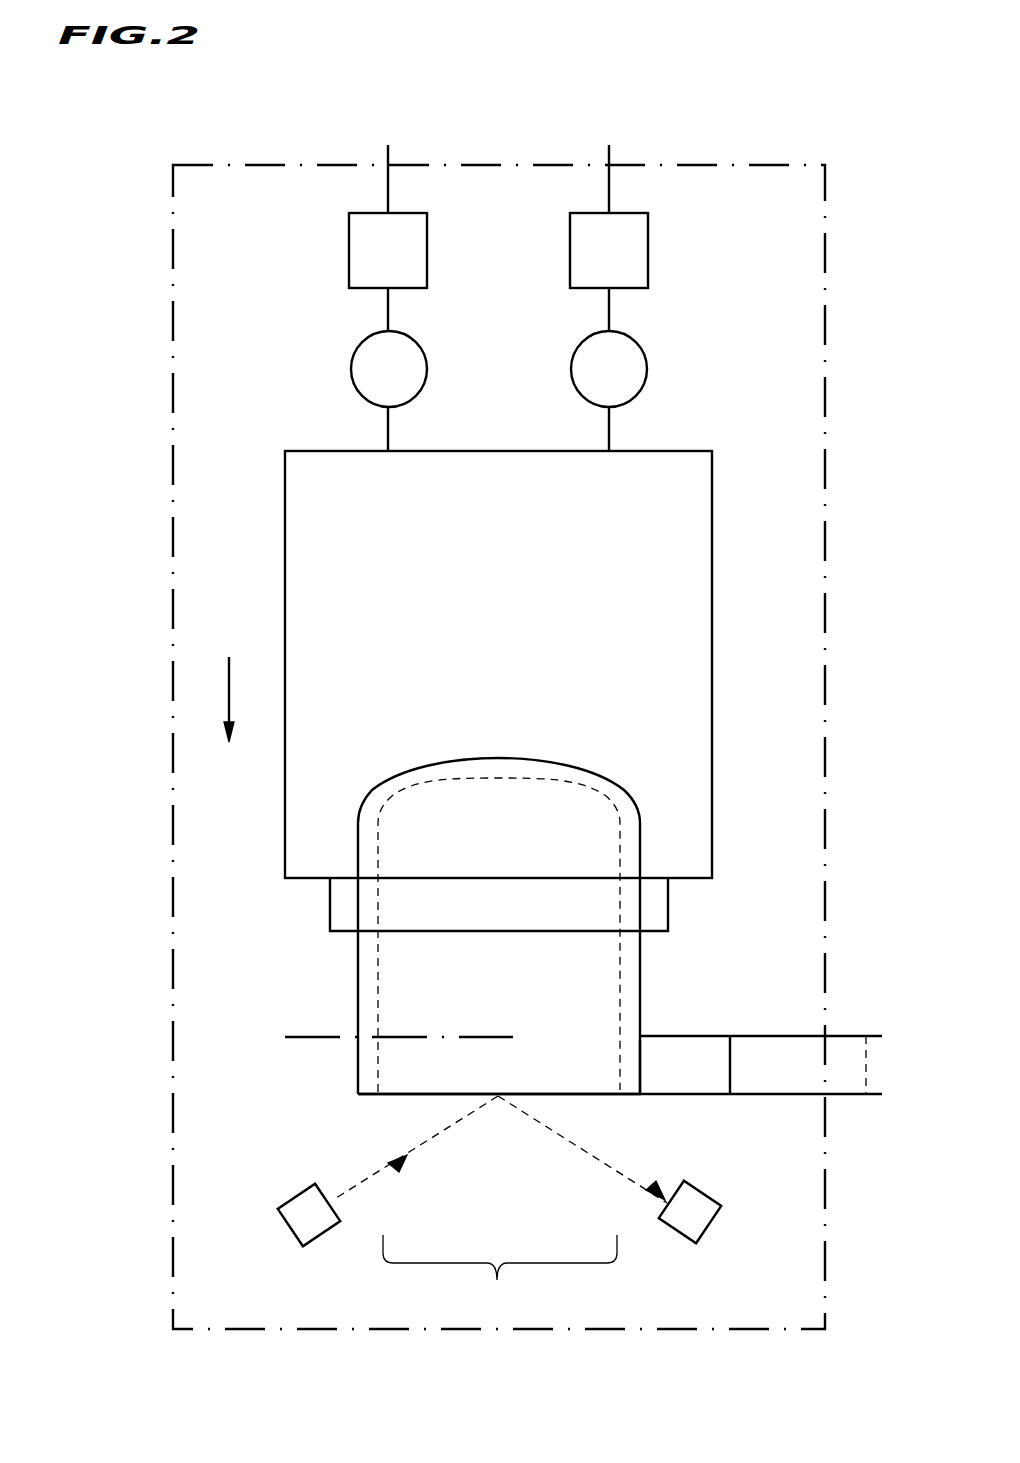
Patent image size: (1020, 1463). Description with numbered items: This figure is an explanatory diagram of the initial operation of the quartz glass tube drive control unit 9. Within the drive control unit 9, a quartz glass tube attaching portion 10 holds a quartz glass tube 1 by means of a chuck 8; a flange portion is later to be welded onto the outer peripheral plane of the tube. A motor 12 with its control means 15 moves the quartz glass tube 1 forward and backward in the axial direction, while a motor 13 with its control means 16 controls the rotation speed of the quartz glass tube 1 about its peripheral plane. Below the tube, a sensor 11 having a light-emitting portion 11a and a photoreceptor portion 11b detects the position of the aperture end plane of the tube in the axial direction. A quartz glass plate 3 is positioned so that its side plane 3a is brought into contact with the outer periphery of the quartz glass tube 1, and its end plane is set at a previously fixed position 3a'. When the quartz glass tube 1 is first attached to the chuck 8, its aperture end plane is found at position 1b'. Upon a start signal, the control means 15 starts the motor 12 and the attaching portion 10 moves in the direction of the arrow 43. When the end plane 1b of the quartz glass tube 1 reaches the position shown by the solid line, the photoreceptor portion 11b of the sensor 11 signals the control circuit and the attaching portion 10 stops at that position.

The quartz glass tube 1 is at (630, 992).
The end plane 1b is at (463, 1126).
The position of aperture end plane 1b' is at (374, 1073).
The quartz glass plate 3 is at (842, 1050).
The side plane 3a is at (581, 1037).
The previously fixed position 3a' is at (860, 1099).
The chuck 8 is at (338, 903).
The quartz glass tube drive control unit 9 is at (827, 312).
The quartz glass tube attaching portion 10 is at (507, 646).
The sensor 11 is at (500, 1276).
The light-emitting portion 11a is at (337, 1235).
The photoreceptor portion 11b is at (668, 1217).
The motor 12 is at (642, 362).
The motor 13 is at (368, 347).
The control means 15 is at (637, 247).
The control means 16 is at (359, 252).
The arrow 43 is at (227, 690).